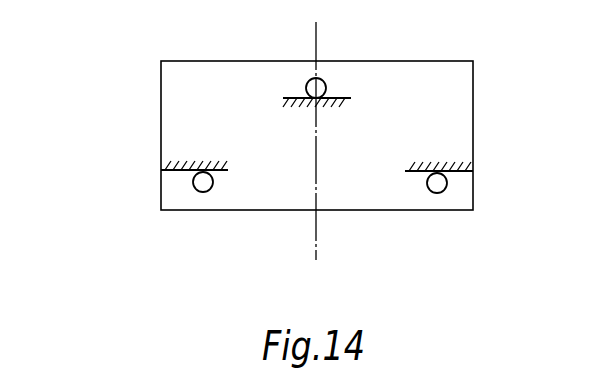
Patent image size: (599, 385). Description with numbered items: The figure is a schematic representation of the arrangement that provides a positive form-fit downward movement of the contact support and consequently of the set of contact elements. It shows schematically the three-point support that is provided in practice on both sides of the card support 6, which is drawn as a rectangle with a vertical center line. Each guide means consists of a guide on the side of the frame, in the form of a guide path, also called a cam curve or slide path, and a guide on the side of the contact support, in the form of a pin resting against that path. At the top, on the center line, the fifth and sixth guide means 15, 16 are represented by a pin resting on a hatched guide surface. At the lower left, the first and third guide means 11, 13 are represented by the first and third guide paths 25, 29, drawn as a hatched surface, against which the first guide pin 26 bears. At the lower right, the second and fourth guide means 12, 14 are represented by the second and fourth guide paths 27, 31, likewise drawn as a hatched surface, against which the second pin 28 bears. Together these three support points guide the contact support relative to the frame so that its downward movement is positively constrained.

The card support 6 is at (473, 110).
The fifth guide means 15 is at (361, 60).
The sixth guide means 16 is at (336, 78).
The first guide path 25 is at (130, 186).
The third guide path 29 is at (164, 179).
The first guide means 11 is at (173, 229).
The third guide means 13 is at (184, 200).
The first guide pin 26 is at (210, 189).
The second guide path 27 is at (413, 226).
The fourth guide path 31 is at (412, 184).
The second pin 28 is at (448, 182).
The second guide means 12 is at (472, 230).
The fourth guide means 14 is at (456, 202).